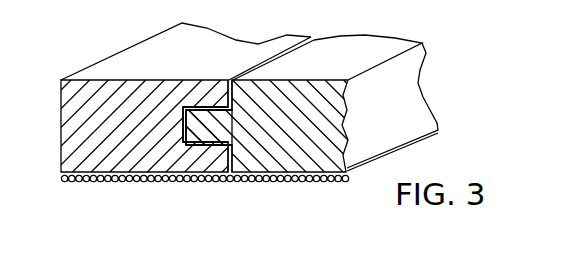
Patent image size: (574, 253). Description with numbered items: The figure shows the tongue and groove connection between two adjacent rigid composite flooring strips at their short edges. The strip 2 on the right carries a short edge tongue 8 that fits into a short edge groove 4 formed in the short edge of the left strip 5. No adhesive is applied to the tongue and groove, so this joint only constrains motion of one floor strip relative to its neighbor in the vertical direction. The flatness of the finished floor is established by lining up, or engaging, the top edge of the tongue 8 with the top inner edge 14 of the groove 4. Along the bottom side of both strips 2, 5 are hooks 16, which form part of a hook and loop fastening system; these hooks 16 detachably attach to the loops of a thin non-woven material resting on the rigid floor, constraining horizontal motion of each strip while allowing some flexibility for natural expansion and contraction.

The flooring strip 2 is at (357, 59).
The short edge groove 4 is at (210, 138).
The left flooring strip 5 is at (174, 57).
The short edge tongue 8 is at (183, 129).
The top inner edge of the groove 14 is at (212, 103).
The hooks 16 is at (157, 184).